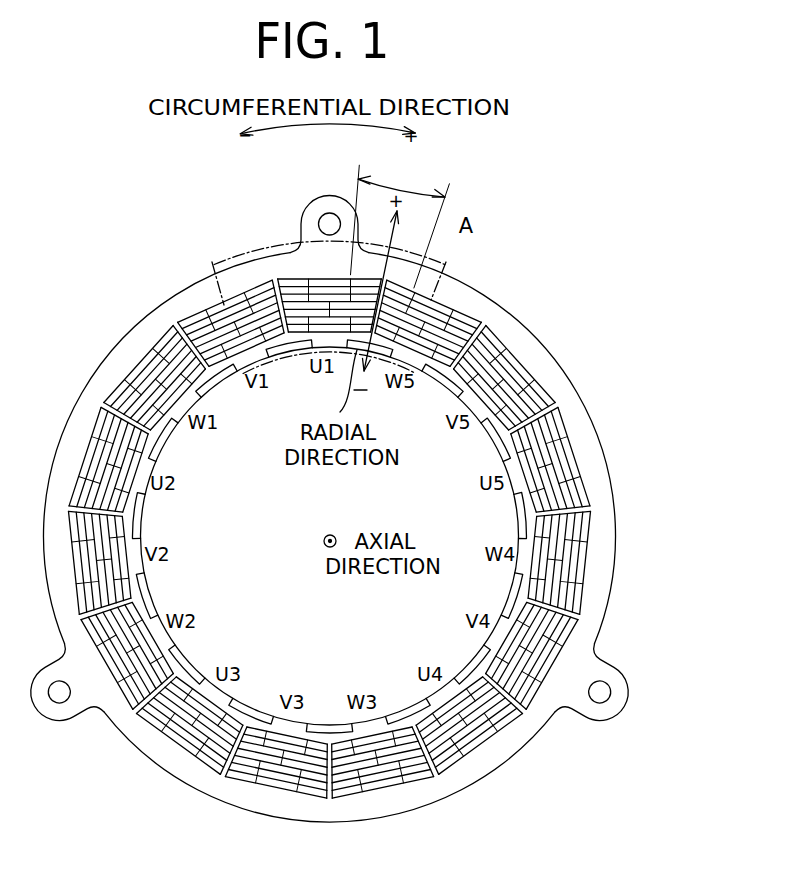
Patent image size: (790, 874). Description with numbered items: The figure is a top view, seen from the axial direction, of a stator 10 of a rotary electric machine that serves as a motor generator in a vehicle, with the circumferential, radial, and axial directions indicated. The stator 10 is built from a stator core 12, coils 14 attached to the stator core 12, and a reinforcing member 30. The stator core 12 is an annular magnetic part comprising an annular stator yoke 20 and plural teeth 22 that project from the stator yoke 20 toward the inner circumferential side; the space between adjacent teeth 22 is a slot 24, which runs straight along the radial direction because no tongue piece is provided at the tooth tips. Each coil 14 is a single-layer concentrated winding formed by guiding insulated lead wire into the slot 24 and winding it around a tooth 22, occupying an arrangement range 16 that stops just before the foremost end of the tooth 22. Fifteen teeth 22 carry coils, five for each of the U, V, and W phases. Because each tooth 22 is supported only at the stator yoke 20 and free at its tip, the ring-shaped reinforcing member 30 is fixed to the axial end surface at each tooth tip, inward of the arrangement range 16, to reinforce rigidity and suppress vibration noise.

The stator 10 is at (534, 255).
The stator core 12 is at (222, 188).
The coil 14 is at (434, 296).
The arrangement range 16 is at (457, 312).
The stator yoke 20 is at (272, 268).
The tooth 22 is at (332, 282).
The slot 24 is at (400, 223).
The reinforcing member 30 is at (432, 378).